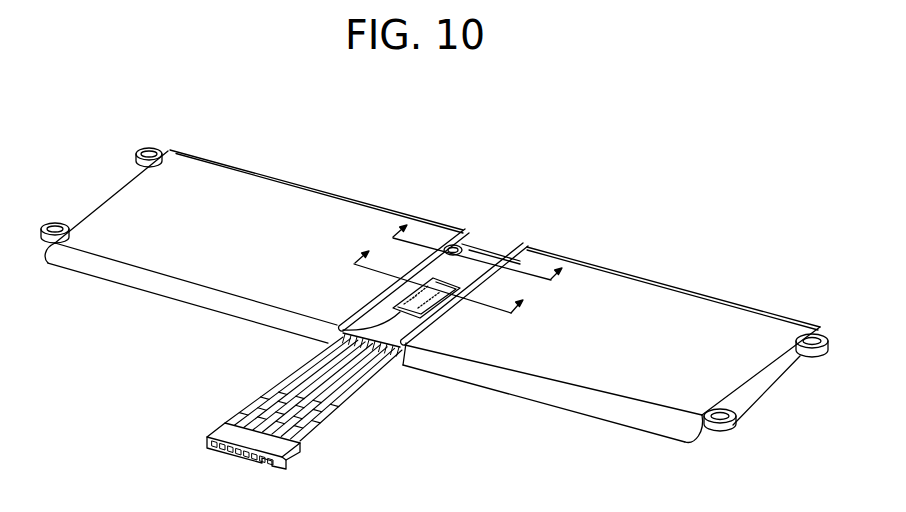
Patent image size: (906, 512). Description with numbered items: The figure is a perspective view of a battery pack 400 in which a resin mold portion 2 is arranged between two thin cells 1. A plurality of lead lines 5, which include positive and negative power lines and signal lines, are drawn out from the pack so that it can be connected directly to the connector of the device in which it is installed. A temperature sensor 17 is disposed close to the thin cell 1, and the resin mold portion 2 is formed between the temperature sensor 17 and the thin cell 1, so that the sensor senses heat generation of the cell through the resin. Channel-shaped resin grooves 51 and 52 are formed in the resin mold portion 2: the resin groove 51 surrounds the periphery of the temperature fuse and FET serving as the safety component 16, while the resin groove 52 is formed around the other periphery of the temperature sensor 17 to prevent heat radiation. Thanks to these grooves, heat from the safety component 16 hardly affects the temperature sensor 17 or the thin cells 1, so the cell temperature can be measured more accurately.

The battery pack 400 is at (688, 158).
The thin cell 1 is at (267, 195).
The resin mold portion 2 is at (497, 258).
The lead lines 5 is at (328, 413).
The safety component 16 is at (338, 336).
The temperature sensor 17 is at (452, 243).
The resin groove 51 is at (438, 307).
The resin groove 52 is at (464, 246).